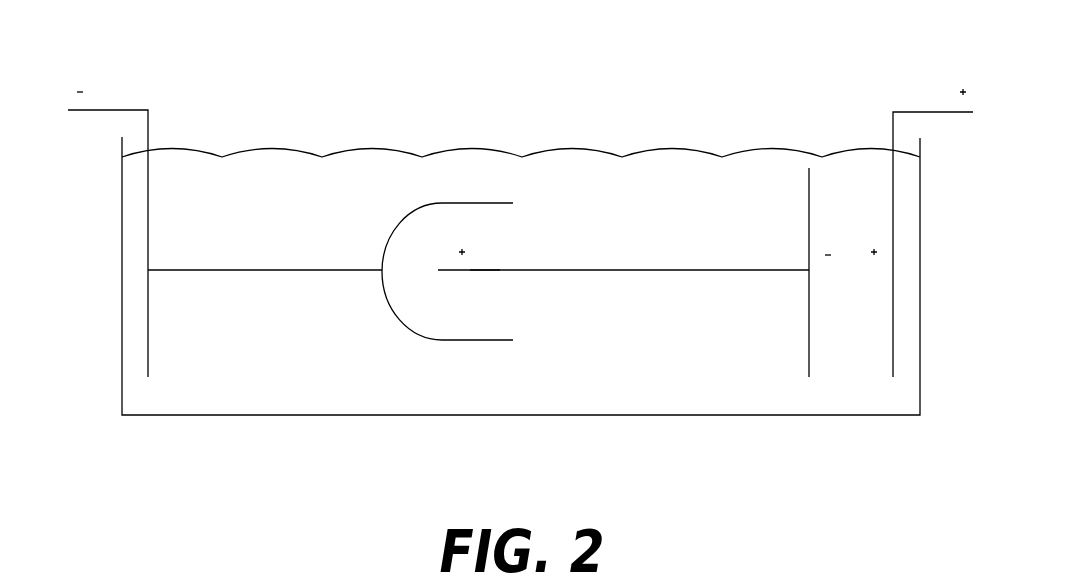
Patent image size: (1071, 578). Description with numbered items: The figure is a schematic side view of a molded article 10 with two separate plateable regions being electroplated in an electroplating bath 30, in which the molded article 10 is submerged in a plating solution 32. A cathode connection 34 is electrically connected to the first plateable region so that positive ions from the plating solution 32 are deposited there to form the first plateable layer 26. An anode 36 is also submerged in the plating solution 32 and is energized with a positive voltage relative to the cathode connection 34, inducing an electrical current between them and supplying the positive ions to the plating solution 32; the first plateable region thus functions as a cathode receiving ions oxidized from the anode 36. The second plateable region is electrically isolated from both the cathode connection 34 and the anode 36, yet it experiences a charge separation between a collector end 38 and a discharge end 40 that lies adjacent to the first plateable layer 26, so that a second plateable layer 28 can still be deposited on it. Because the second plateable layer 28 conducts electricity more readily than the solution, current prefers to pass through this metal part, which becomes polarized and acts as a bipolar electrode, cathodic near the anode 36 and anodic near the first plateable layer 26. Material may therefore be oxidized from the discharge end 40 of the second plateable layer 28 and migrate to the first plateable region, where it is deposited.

The molded article 10 is at (460, 198).
The first plateable layer 26 is at (268, 270).
The second plateable layer 28 is at (623, 270).
The electroplating bath 30 is at (378, 72).
The plating solution 32 is at (677, 170).
The cathode connection 34 is at (115, 110).
The anode 36 is at (892, 132).
The collector end 38 is at (808, 192).
The discharge end 40 is at (478, 270).